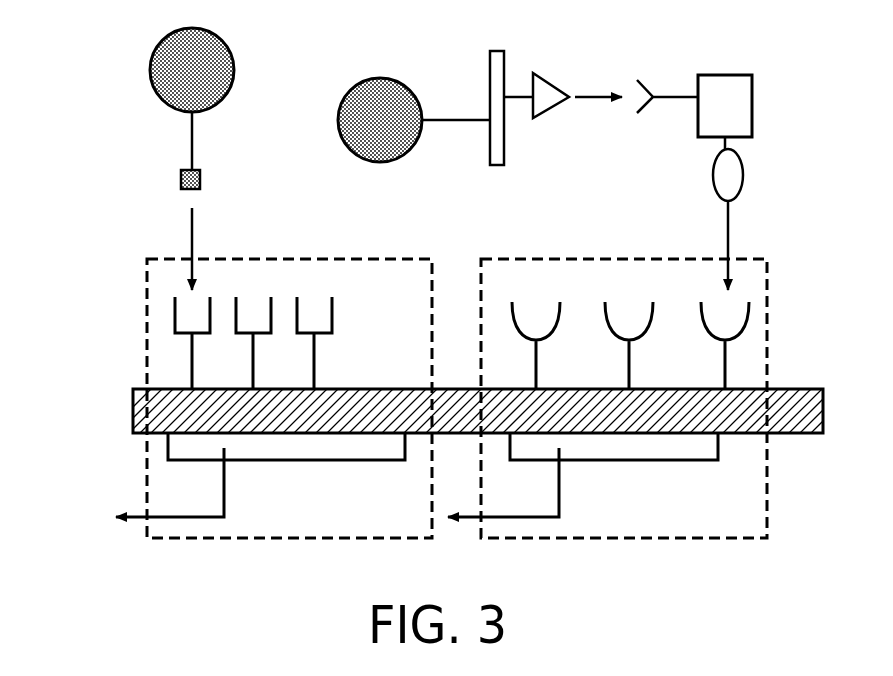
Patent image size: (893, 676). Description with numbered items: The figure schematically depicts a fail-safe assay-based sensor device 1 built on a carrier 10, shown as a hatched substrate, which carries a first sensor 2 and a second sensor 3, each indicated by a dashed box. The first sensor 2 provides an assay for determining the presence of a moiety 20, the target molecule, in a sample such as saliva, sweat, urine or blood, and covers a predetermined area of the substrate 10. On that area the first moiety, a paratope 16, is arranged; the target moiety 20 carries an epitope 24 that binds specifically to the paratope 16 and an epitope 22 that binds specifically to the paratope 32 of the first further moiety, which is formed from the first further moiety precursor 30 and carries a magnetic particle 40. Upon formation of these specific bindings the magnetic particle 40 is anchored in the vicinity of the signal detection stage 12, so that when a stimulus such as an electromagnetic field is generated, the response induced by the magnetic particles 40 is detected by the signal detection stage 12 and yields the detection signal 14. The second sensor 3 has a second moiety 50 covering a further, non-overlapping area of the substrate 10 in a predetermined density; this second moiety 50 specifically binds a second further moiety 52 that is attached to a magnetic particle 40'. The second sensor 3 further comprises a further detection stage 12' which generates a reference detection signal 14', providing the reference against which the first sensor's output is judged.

The sensor device 1 is at (88, 92).
The first sensor 2 is at (624, 540).
The second sensor 3 is at (290, 540).
The carrier 10 is at (786, 425).
The signal detection stage 12 is at (614, 481).
The further detection stage 12' is at (286, 481).
The detection signal 14 is at (543, 482).
The reference detection signal 14' is at (212, 482).
The paratope 16 is at (745, 313).
The moiety 20 is at (748, 107).
The epitope 22 is at (641, 112).
The epitope 24 is at (738, 175).
The first further moiety precursor 30 is at (496, 165).
The paratope 32 is at (549, 108).
The magnetic particle 40 is at (414, 84).
The magnetic particle 40' is at (235, 99).
The second moiety 50 is at (332, 315).
The second further moiety 52 is at (200, 180).